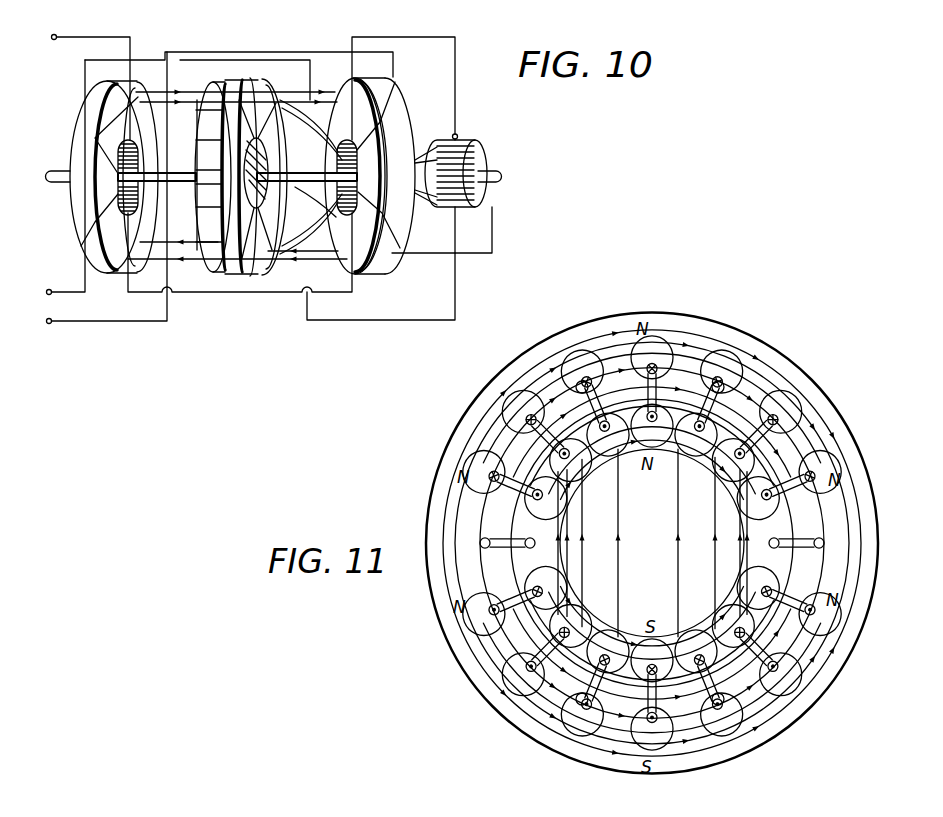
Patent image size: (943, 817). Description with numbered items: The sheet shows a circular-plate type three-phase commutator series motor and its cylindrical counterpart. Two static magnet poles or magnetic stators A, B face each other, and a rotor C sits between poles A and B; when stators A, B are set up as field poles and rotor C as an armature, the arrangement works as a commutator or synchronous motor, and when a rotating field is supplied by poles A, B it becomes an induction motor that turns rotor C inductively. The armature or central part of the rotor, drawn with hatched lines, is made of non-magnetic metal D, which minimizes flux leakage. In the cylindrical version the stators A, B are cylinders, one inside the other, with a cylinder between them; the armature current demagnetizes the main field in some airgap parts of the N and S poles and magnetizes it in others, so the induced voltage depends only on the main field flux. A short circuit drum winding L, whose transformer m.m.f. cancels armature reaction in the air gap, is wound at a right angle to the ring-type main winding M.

In FIG. 10, the static magnet pole A is at (114, 177).
In FIG. 11, the static magnet pole A is at (652, 527).
In FIG. 10, the static magnet pole B is at (406, 176).
In FIG. 11, the static magnet pole B is at (577, 543).
In FIG. 10, the rotor C is at (213, 177).
In FIG. 11, the rotor C is at (628, 543).
In FIG. 10, the non-magnetic metal D is at (282, 104).
In FIG. 10, the short circuit drum winding L is at (200, 120).
In FIG. 11, the short circuit drum winding L is at (610, 543).
In FIG. 10, the main winding M is at (238, 80).